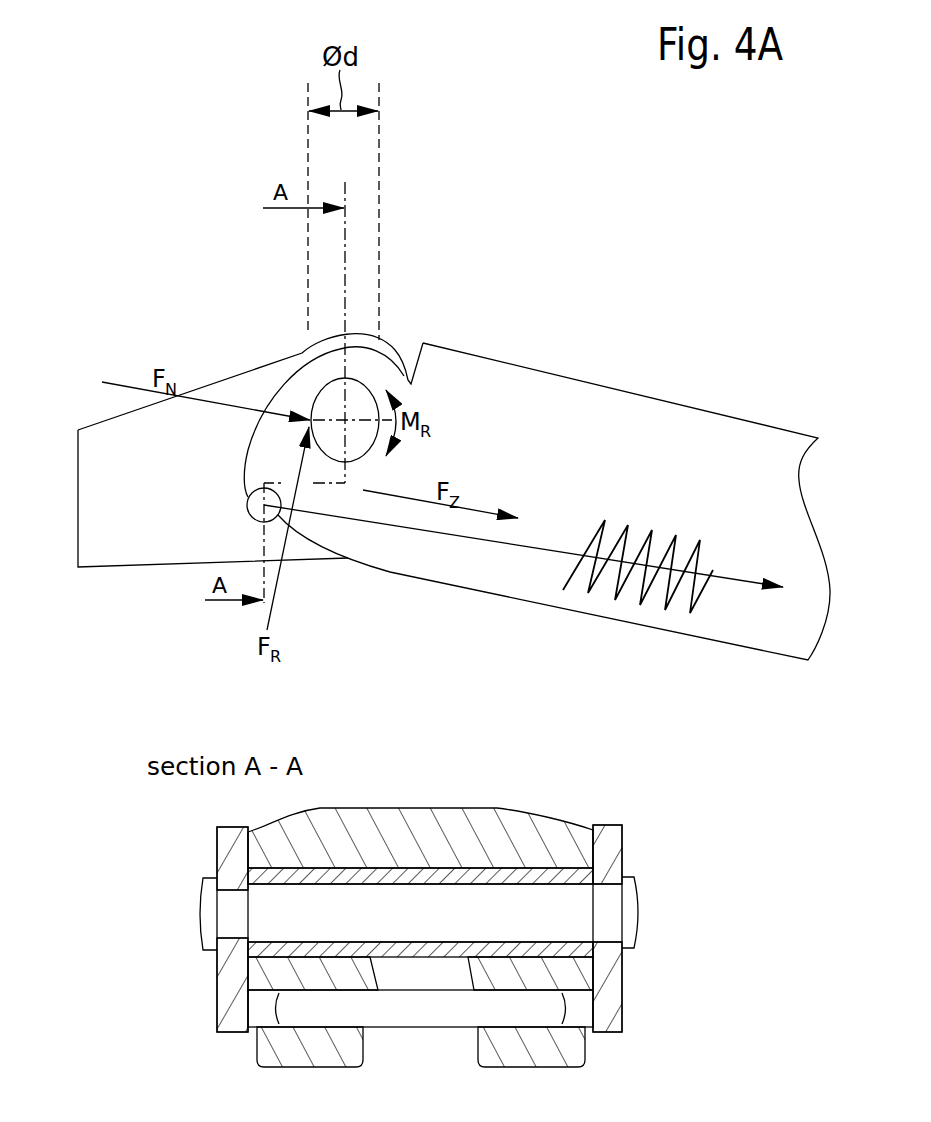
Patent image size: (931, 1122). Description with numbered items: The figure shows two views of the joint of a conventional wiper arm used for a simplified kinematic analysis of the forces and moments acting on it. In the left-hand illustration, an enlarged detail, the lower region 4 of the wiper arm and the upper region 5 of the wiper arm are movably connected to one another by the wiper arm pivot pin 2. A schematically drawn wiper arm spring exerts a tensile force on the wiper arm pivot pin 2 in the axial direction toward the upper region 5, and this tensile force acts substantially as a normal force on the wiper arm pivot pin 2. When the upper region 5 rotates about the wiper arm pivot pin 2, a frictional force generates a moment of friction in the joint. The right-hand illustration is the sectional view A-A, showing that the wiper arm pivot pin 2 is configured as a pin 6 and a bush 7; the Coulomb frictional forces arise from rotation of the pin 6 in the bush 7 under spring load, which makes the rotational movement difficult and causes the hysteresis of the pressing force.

The wiper arm pivot pin 2 is at (330, 382).
The lower region 4 is at (78, 428).
The upper region 5 is at (527, 368).
The pin 6 is at (267, 895).
The bush 7 is at (267, 950).